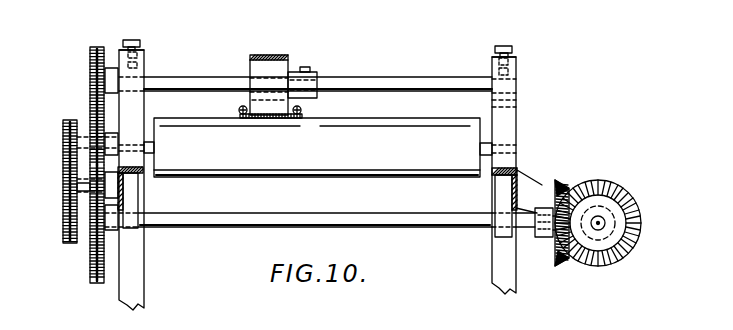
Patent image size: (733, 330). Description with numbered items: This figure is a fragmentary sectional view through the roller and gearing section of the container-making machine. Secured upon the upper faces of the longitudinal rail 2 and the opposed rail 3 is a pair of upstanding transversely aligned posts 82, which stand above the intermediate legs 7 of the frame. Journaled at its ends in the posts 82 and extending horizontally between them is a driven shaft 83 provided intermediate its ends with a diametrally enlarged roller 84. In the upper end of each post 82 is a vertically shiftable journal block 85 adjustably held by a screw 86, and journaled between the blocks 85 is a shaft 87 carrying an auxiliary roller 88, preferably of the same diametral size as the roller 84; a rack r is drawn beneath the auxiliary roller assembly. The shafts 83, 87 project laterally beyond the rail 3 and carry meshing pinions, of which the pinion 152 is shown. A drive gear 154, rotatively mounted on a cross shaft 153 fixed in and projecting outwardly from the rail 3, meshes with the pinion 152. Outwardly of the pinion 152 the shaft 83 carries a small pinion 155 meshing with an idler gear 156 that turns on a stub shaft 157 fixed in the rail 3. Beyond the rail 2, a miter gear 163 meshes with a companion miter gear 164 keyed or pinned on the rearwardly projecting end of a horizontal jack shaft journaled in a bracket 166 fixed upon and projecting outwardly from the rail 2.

The longitudinal rail 2 is at (518, 169).
The rail 3 is at (144, 169).
The intermediate legs 7 is at (138, 276).
The posts 82 is at (145, 52).
The driven shaft 83 is at (484, 172).
The roller 84 is at (324, 168).
The journal block 85 is at (145, 67).
The screw 86 is at (132, 40).
The shaft 87 is at (223, 79).
The auxiliary roller 88 is at (277, 55).
The rack r is at (275, 119).
The pinion 152 is at (90, 56).
The cross shaft 153 is at (418, 228).
The drive gear 154 is at (90, 258).
The small pinion 155 is at (63, 142).
The idler gear 156 is at (75, 199).
The stub shaft 157 is at (78, 200).
The miter gear 163 is at (560, 265).
The companion miter gear 164 is at (641, 220).
The bracket 166 is at (542, 184).